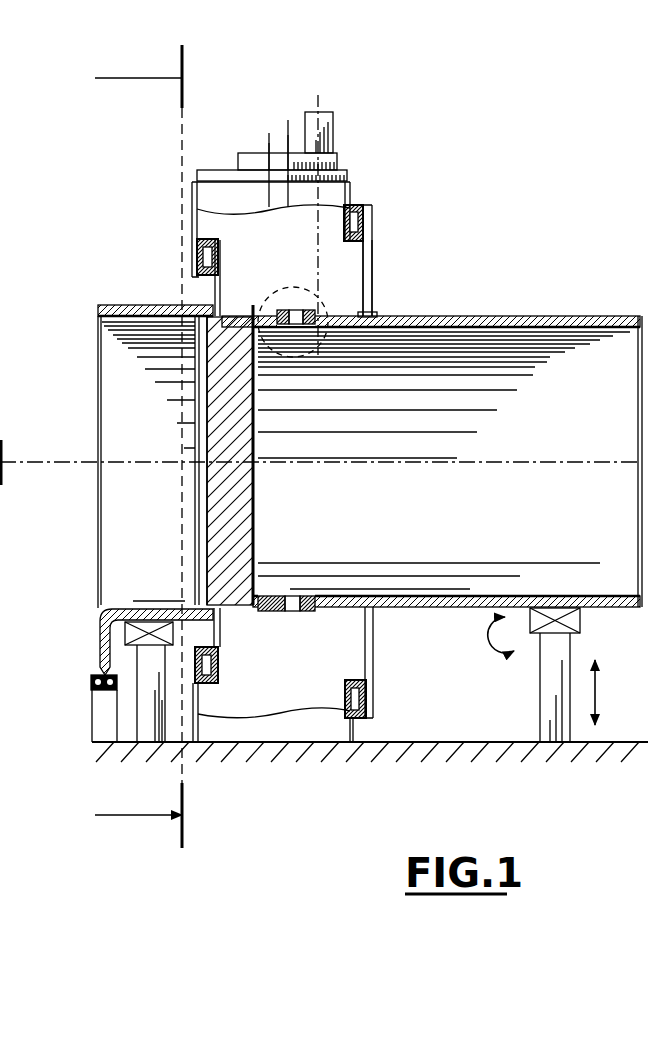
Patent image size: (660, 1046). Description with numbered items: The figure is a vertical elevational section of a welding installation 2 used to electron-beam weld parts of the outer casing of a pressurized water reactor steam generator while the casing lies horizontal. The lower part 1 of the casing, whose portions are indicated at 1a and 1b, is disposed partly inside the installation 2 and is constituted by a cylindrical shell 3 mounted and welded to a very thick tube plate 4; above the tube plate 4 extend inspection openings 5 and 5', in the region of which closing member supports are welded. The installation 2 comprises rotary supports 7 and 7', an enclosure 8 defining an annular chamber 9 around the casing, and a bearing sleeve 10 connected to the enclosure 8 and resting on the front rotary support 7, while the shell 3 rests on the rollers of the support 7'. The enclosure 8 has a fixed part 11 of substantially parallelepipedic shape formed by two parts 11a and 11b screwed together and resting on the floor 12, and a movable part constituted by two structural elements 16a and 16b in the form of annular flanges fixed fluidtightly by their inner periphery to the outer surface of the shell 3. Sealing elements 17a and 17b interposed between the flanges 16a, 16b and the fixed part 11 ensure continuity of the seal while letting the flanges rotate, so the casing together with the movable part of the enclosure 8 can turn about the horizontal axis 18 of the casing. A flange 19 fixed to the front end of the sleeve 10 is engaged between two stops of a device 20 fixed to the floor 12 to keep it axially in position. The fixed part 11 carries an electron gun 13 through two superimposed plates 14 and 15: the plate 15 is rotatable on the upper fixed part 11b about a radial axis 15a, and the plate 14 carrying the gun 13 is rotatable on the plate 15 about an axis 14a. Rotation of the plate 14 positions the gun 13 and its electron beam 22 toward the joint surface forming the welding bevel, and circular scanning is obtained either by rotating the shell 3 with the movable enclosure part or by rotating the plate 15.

The lower part of outer casing 1 is at (503, 315).
The pipe section 1a is at (92, 520).
The pipe section 1b is at (97, 380).
The welding installation 2 is at (376, 205).
The cylindrical shell 3 is at (570, 317).
The tube plate 4 is at (322, 273).
The inspection opening 5 is at (309, 354).
The inspection opening 5' is at (320, 571).
The rotary support 7 is at (99, 690).
The rotary support 7' is at (571, 675).
The enclosure 8 is at (500, 670).
The annular chamber 9 is at (274, 667).
The bearing sleeve 10 is at (105, 306).
The fixed part of enclosure 11 is at (180, 187).
The lower fixed part 11a is at (232, 745).
The upper fixed part 11b is at (203, 197).
The floor 12 is at (370, 771).
The electron gun 13 is at (323, 125).
The plate 14 is at (337, 155).
The axis of plate 14a is at (287, 132).
The plate 15 is at (214, 177).
The axis of plate 15a is at (268, 142).
The structural element 16a is at (220, 290).
The structural element 16b is at (373, 295).
The sealing element 17a is at (198, 256).
The sealing element 17b is at (372, 222).
The axis of casing 18 is at (542, 458).
The flange 19 is at (102, 640).
The device 20 is at (92, 686).
The electron beam 22 is at (327, 303).